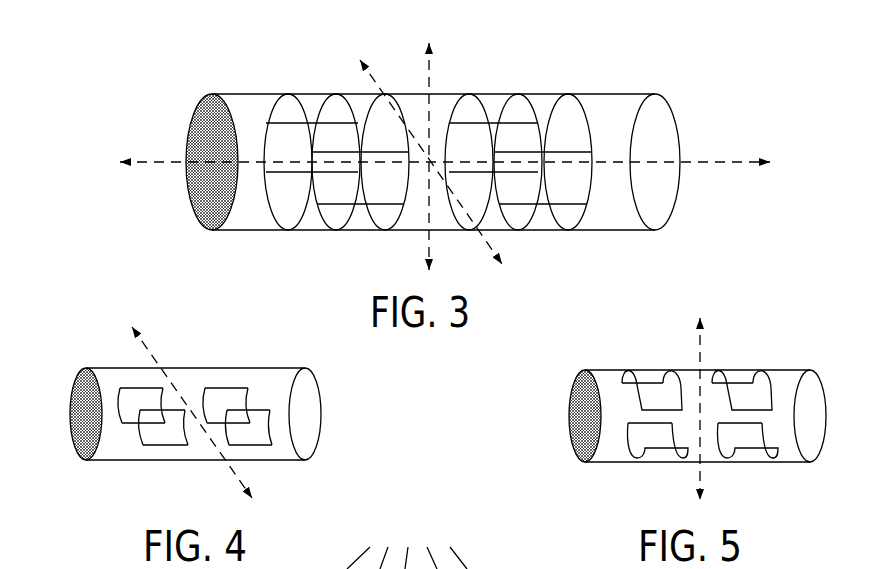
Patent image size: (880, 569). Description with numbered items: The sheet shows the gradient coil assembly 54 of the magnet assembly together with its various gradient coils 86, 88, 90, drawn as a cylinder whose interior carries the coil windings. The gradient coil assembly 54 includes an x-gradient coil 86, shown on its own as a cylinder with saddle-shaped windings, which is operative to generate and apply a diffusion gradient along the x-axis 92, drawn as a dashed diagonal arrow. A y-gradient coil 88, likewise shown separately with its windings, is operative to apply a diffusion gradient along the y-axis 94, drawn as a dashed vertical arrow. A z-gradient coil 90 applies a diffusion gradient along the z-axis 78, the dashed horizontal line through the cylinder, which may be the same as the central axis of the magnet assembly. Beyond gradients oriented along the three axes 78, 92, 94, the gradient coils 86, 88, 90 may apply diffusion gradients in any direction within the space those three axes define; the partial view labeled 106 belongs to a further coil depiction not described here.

In FIG. 3, the gradient coil assembly 54 is at (178, 50).
In FIG. 3, the z-axis 78 is at (705, 162).
In FIG. 3, the x-gradient coil 86 is at (598, 71).
In FIG. 4, the x-gradient coil 86 is at (88, 342).
In FIG. 3, the y-gradient coil 88 is at (518, 162).
In FIG. 5, the y-gradient coil 88 is at (640, 348).
In FIG. 3, the z-gradient coil 90 is at (429, 163).
In FIG. 3, the x-axis 92 is at (376, 80).
In FIG. 4, the x-axis 92 is at (155, 358).
In FIG. 3, the y-axis 94 is at (431, 70).
In FIG. 5, the y-axis 94 is at (702, 354).
In FIG. 3, the coil windings 106 is at (407, 545).